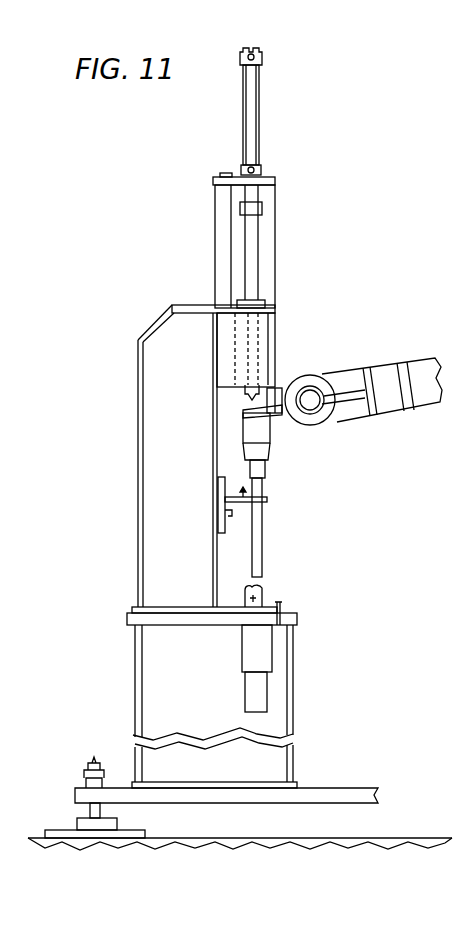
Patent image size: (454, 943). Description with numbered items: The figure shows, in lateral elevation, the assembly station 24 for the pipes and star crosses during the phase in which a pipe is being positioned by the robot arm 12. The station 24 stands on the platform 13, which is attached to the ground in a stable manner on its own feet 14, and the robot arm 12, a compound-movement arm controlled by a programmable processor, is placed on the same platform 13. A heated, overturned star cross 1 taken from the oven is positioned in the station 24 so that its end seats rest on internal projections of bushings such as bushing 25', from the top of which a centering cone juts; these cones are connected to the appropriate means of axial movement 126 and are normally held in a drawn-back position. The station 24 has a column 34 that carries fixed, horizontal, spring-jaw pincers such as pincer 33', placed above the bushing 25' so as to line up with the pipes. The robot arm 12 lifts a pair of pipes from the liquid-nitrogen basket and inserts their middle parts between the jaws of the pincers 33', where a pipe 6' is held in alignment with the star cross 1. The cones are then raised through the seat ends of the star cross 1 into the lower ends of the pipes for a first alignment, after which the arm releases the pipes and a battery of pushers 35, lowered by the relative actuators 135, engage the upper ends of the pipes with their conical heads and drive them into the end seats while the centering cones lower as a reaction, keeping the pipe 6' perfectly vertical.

The actuator 135 is at (262, 110).
The assembly station 24 is at (160, 323).
The column 34 is at (160, 418).
The pusher 35 is at (252, 382).
The robot arm 12 is at (399, 366).
The pipe 6' is at (278, 527).
The fixed horizontal pincer 33' is at (273, 489).
The star cross 1 is at (243, 598).
The bushing 25' is at (280, 588).
The means of axial movement 126 is at (262, 698).
The platform 13 is at (125, 793).
The foot 14 is at (84, 824).